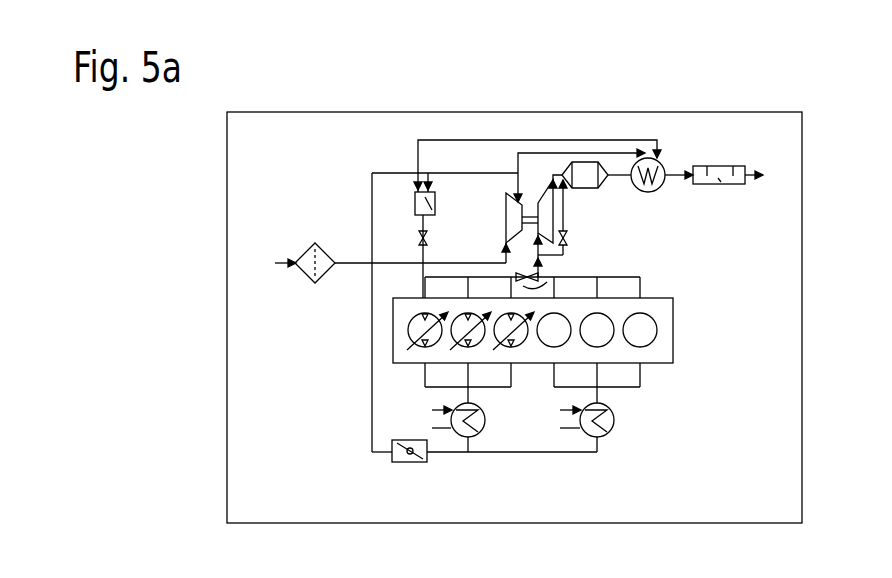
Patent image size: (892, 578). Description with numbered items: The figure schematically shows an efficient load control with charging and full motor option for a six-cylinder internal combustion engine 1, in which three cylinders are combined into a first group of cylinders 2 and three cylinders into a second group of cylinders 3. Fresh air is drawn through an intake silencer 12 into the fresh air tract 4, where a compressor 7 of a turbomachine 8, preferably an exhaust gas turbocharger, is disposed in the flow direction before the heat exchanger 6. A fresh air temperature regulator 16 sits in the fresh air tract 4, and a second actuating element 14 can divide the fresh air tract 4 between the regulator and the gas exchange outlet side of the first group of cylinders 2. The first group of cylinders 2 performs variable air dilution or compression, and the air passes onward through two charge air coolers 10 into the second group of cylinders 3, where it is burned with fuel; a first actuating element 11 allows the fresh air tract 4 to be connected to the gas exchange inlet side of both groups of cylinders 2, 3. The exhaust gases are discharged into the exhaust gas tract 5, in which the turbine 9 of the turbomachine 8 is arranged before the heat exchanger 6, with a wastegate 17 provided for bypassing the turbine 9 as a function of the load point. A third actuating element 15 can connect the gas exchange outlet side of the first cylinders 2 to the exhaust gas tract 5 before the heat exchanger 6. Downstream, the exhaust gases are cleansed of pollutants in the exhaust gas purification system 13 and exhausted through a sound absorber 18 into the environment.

The internal combustion engine 1 is at (675, 306).
The first group of cylinders 2 is at (408, 330).
The second group of cylinders 3 is at (657, 328).
The fresh air tract 4 is at (344, 260).
The exhaust gas tract 5 is at (644, 283).
The heat exchanger 6 is at (650, 193).
The compressor 7 is at (505, 220).
The turbomachine 8 is at (530, 196).
The turbine 9 is at (566, 210).
The charge air coolers 10 is at (483, 437).
The first actuating element 11 is at (392, 455).
The intake silencer 12 is at (315, 243).
The exhaust gas purification system 13 is at (596, 192).
The second actuating element 14 is at (418, 237).
The third actuating element 15 is at (552, 275).
The fresh air temperature regulator 16 is at (415, 198).
The wastegate 17 is at (566, 236).
The sound absorber 18 is at (716, 186).